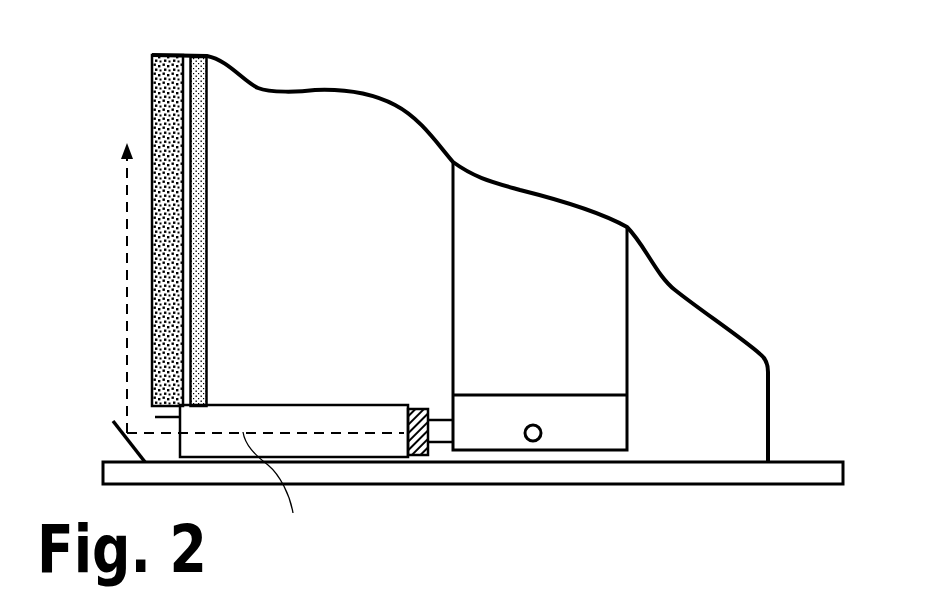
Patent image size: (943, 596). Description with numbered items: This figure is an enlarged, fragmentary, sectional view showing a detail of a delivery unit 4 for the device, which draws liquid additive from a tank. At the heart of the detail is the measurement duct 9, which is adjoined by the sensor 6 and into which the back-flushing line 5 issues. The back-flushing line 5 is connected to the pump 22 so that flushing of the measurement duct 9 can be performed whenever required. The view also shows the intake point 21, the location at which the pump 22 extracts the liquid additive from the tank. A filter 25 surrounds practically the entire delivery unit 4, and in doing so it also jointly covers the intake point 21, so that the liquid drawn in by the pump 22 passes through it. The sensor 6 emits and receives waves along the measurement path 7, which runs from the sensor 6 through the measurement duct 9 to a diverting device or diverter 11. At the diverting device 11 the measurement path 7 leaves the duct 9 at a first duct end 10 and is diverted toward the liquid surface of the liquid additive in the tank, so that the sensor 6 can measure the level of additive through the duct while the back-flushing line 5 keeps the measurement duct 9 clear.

The delivery unit 4 is at (132, 62).
The back-flushing line 5 is at (440, 445).
The sensor 6 is at (418, 456).
The measurement path 7 is at (275, 493).
The measurement duct 9 is at (315, 404).
The first duct end 10 is at (155, 417).
The diverting device 11 is at (123, 428).
The intake point 21 is at (541, 428).
The pump 22 is at (628, 293).
The filter 25 is at (150, 207).